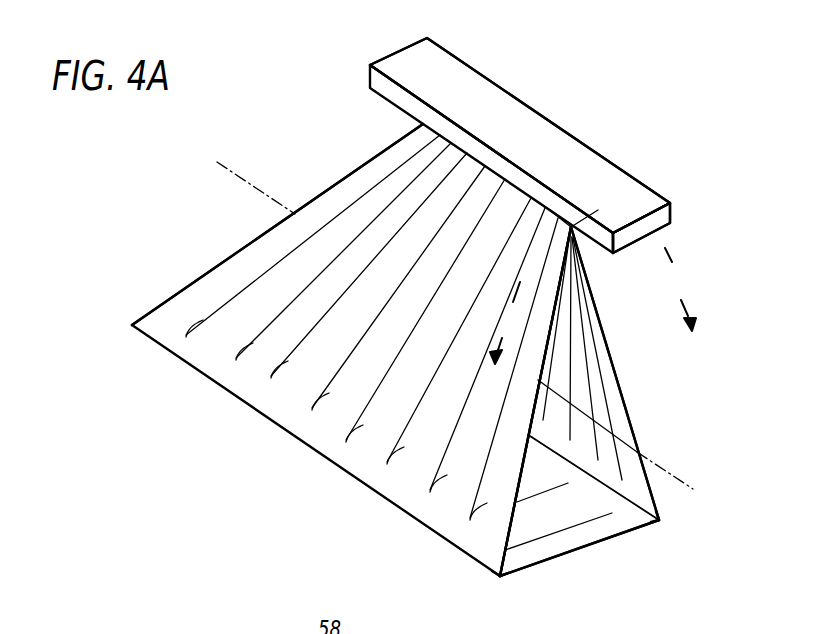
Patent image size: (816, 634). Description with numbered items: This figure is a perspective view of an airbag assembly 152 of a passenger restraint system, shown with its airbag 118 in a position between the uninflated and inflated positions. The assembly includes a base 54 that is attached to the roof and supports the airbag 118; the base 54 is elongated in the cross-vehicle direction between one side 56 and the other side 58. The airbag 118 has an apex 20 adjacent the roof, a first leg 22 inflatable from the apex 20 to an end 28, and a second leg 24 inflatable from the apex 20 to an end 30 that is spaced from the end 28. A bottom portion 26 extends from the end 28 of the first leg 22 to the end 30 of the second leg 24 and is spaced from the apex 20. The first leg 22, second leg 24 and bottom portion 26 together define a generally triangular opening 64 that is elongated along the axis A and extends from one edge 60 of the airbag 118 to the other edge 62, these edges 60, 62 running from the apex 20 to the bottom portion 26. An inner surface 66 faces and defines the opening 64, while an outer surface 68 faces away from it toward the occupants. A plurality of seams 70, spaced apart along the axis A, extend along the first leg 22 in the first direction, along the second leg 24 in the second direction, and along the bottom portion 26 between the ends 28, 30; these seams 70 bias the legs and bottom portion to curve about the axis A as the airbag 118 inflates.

The airbag assembly 152 is at (318, 127).
The base 54 is at (565, 132).
The side of the base 58 is at (383, 59).
The side of the base 56 is at (660, 218).
The first leg 22 is at (252, 243).
The edge 62 is at (195, 280).
The plurality of seams 70 is at (318, 409).
The outer surface 68 is at (345, 393).
The second leg 24 is at (613, 352).
The airbag 118 is at (611, 341).
The apex 20 is at (571, 233).
The inner surface 66 is at (613, 401).
The opening 64 is at (560, 505).
The bottom portion 26 is at (560, 558).
The edge 60 is at (514, 529).
The end of the first leg 28 is at (500, 584).
The end of the second leg 30 is at (663, 523).